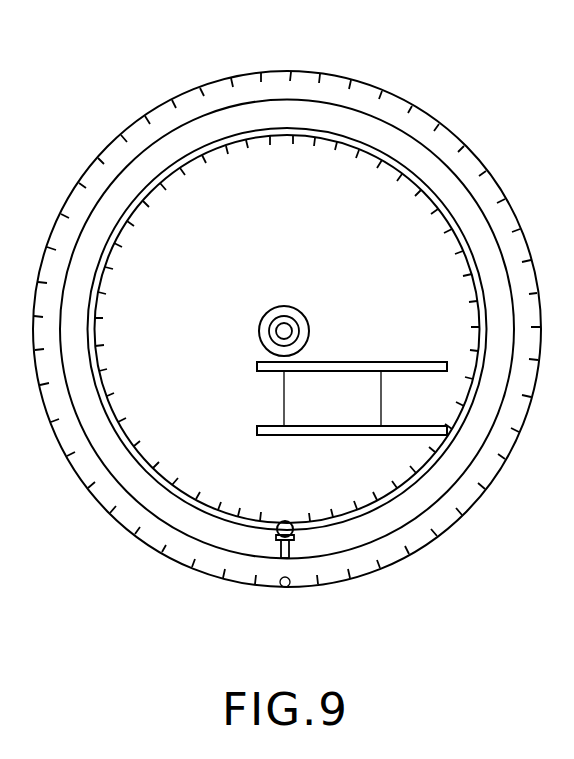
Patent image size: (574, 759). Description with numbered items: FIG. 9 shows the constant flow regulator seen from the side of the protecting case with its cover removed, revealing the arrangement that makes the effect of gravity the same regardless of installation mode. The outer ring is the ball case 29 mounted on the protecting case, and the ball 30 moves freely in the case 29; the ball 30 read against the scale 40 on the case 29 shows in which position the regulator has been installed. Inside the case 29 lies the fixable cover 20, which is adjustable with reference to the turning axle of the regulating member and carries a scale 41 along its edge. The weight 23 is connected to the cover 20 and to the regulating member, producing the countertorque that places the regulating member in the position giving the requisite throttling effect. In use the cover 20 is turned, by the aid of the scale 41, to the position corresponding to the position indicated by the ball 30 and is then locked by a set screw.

The cover 20 is at (362, 180).
The weight 23 is at (333, 410).
The ball case 29 is at (361, 577).
The ball 30 is at (288, 587).
The scale 40 is at (143, 540).
The scale 41 is at (393, 492).